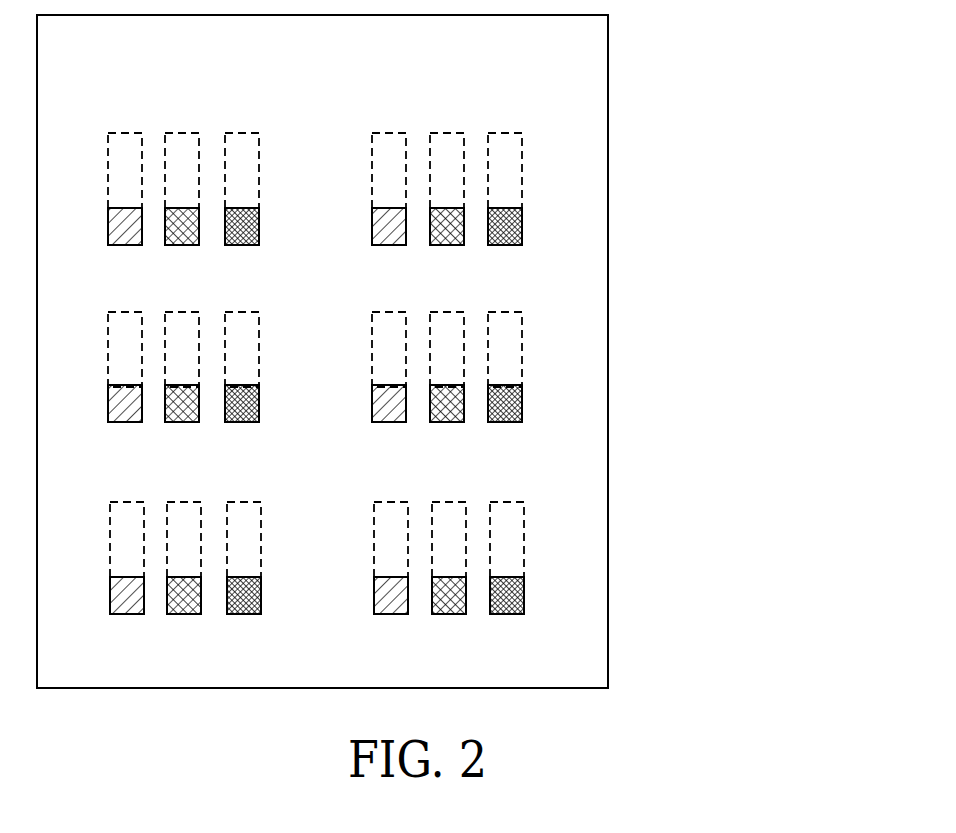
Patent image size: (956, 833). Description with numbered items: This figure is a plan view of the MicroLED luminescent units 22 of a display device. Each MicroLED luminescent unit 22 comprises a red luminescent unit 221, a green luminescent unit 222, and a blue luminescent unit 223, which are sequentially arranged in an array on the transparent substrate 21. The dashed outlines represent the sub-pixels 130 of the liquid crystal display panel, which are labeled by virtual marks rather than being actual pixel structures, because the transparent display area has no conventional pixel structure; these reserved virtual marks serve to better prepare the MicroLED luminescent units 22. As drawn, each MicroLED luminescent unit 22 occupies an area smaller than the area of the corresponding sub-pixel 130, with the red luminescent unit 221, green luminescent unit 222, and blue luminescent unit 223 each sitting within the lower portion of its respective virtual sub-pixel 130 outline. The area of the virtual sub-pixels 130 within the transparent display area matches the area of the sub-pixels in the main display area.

The transparent substrate 21 is at (592, 503).
The MicroLED luminescent unit 22 is at (471, 322).
The red luminescent unit 221 is at (392, 220).
The green luminescent unit 222 is at (447, 212).
The blue luminescent unit 223 is at (508, 240).
The sub-pixel 130 is at (503, 323).